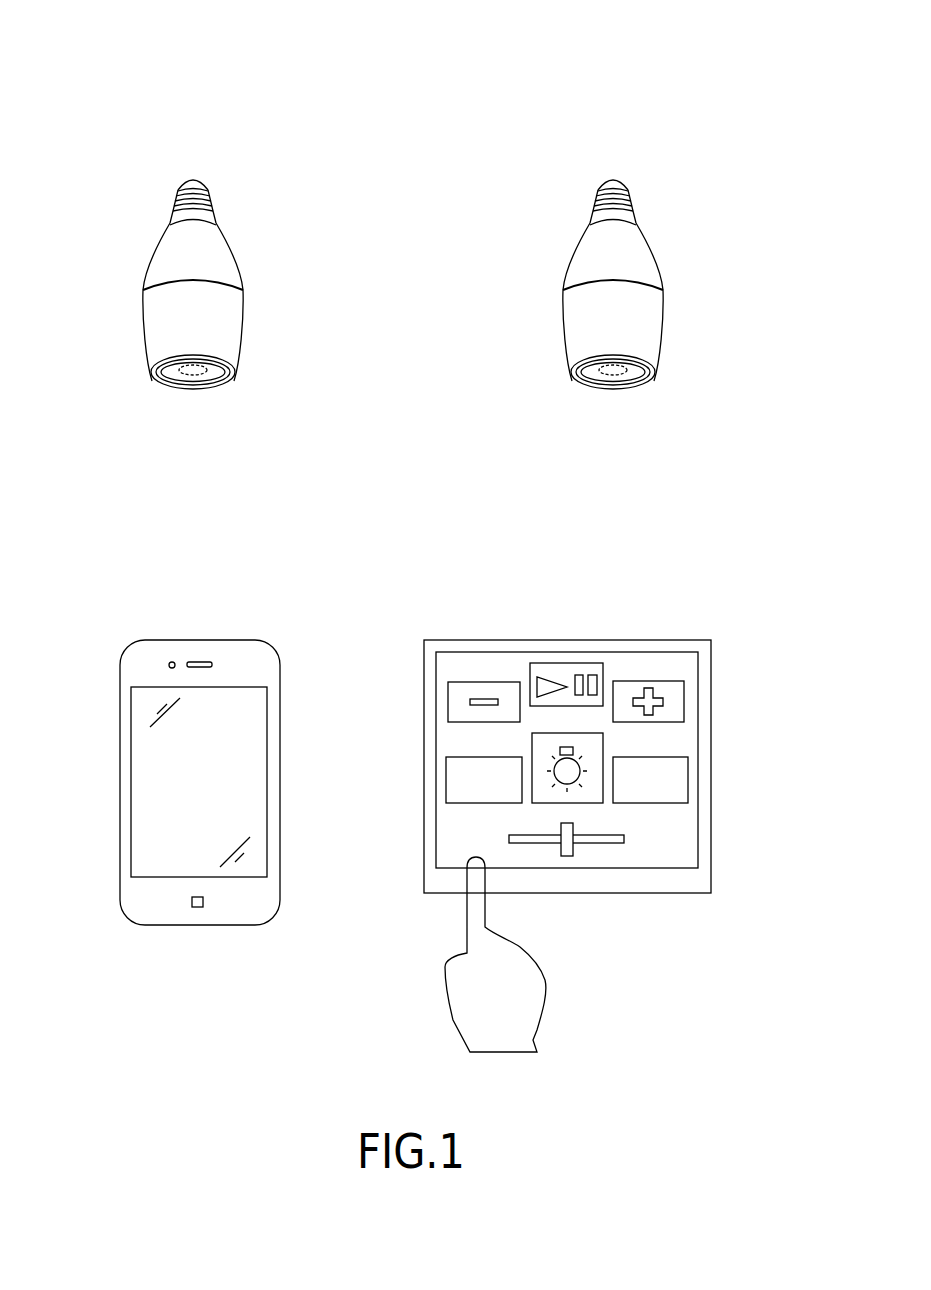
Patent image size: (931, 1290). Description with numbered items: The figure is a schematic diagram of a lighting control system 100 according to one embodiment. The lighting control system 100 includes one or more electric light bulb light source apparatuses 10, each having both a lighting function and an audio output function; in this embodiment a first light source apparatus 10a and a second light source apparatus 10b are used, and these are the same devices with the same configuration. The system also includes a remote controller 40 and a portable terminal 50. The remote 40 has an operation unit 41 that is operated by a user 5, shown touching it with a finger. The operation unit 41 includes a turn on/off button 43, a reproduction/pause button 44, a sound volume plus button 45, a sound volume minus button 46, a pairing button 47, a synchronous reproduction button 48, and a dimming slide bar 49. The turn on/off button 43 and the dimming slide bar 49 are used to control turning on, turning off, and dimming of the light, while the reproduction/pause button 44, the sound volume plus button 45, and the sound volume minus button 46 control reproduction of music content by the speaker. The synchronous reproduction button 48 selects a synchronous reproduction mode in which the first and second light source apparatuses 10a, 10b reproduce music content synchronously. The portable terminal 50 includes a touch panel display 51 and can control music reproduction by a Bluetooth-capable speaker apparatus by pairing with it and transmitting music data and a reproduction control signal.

The lighting control system 100 is at (430, 105).
The light source apparatus 10 is at (476, 284).
The first light source apparatus 10a is at (243, 291).
The second light source apparatus 10b is at (663, 291).
The portable terminal 50 is at (200, 640).
The touch panel display 51 is at (145, 770).
The remote controller 40 is at (583, 640).
The operation unit 41 is at (643, 652).
The turn on/off button 43 is at (532, 744).
The reproduction/pause button 44 is at (545, 663).
The sound volume plus button 45 is at (684, 702).
The sound volume minus button 46 is at (487, 682).
The pairing button 47 is at (688, 782).
The synchronous reproduction button 48 is at (446, 781).
The dimming slide bar 49 is at (563, 858).
The user 5 is at (532, 1003).